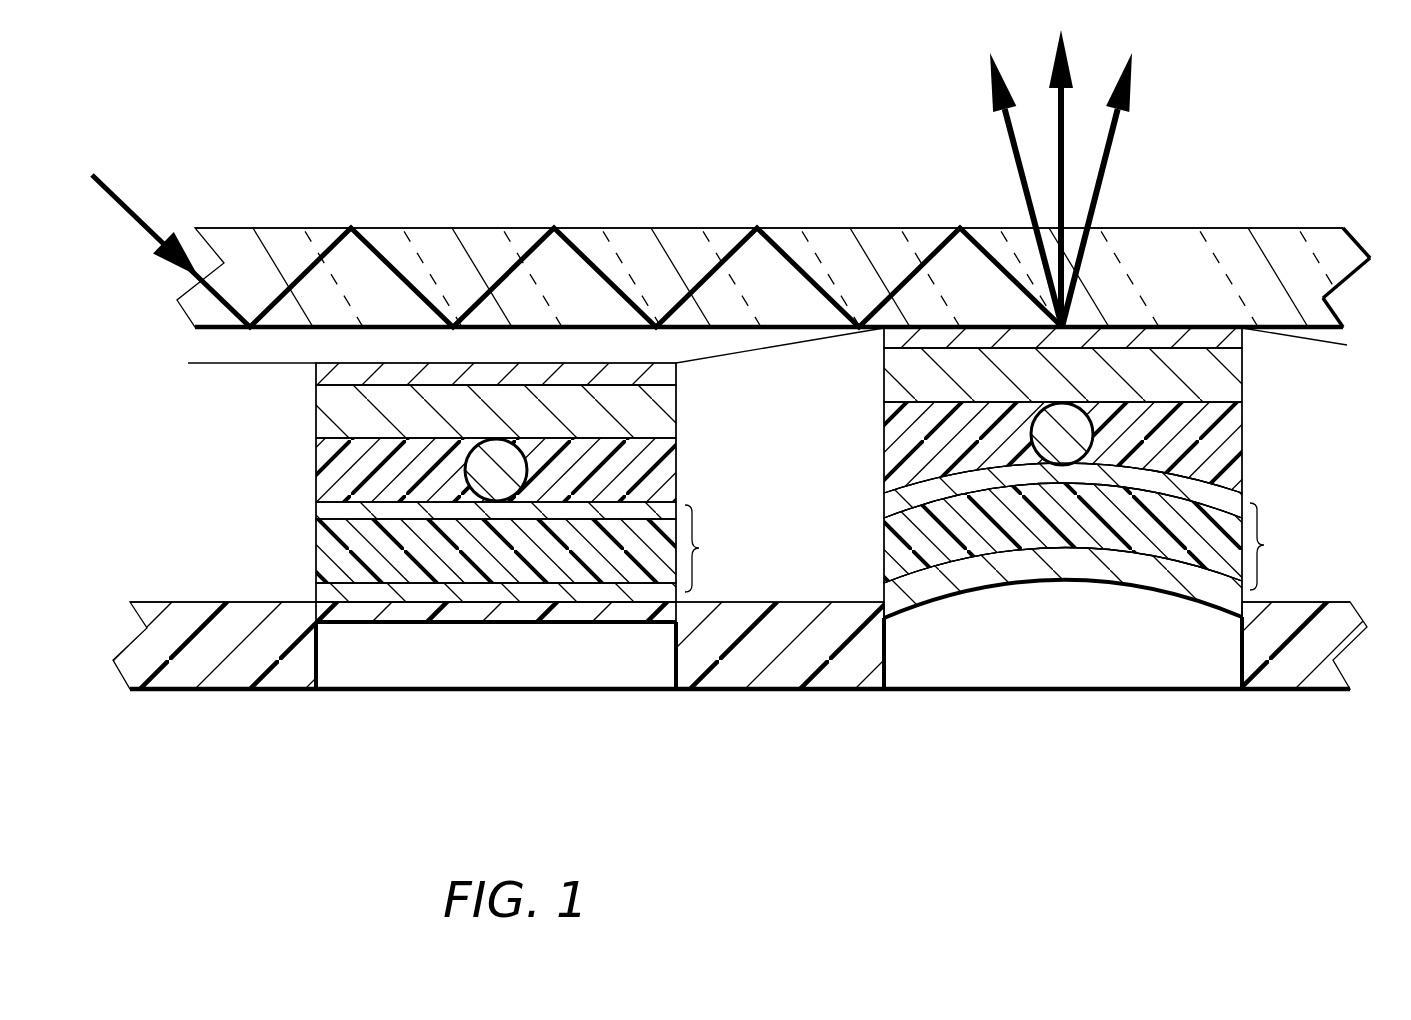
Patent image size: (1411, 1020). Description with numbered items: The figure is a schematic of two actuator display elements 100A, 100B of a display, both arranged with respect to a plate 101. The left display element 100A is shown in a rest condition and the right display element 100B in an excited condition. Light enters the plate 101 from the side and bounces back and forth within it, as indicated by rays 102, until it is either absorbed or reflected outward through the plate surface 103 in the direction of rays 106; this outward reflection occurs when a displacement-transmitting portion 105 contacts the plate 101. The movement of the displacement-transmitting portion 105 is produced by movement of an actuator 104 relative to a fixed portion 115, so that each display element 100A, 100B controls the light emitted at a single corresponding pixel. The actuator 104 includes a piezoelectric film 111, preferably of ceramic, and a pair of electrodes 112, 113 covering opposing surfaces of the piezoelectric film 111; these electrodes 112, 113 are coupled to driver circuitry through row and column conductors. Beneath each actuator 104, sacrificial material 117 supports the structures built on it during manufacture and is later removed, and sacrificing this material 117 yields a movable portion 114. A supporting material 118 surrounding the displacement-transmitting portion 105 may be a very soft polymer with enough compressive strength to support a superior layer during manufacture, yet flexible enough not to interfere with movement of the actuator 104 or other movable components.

The left display element 100A is at (395, 736).
The right display element 100B is at (964, 736).
The plate 101 is at (482, 214).
The rays 102 is at (143, 222).
The plate surface 103 is at (825, 227).
The actuator 104 is at (718, 547).
The displacement-transmitting portion 105 is at (477, 437).
The rays 106 is at (1113, 131).
The piezoelectric film 111 is at (316, 550).
The electrode 112 is at (316, 510).
The electrode 113 is at (316, 593).
The movable portion 114 is at (513, 608).
The fixed portion 115 is at (787, 690).
The sacrificial material 117 is at (615, 655).
The supporting material 118 is at (676, 463).